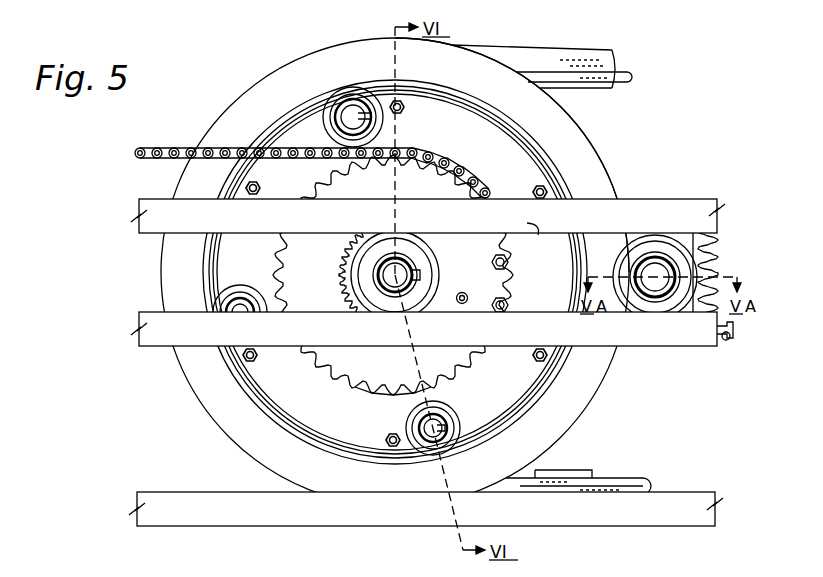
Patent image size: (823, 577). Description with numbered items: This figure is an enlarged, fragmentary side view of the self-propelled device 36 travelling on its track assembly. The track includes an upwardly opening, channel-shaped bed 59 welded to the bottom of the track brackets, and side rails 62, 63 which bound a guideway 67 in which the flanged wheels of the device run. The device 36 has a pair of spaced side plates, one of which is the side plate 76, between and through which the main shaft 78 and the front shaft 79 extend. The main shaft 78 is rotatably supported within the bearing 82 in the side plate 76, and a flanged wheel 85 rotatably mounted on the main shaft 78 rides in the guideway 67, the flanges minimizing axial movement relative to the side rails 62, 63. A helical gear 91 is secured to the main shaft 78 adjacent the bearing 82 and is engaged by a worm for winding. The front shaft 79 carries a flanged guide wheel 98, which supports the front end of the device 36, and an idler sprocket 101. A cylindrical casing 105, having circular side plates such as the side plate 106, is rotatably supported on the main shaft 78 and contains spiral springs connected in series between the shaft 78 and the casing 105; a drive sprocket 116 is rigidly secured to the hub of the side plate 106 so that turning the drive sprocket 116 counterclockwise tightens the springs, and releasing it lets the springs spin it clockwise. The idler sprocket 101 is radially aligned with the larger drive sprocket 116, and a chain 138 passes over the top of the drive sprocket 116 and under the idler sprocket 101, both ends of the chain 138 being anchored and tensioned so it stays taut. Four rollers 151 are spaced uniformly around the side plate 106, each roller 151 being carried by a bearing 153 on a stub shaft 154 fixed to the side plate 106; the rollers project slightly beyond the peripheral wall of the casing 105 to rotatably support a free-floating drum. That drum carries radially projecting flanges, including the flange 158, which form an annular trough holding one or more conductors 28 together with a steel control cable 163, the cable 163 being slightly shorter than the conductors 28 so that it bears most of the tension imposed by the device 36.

The conductor 28 is at (598, 63).
The self-propelled device 36 is at (610, 146).
The channel-shaped bed 59 is at (663, 491).
The side rail 62 is at (596, 199).
The side rail 63 is at (586, 357).
The guideway 67 is at (519, 221).
The side plate 76 is at (633, 283).
The main shaft 78 is at (412, 272).
The front shaft 79 is at (650, 270).
The bearing 82 is at (416, 283).
The wheel 85 is at (405, 246).
The helical gear 91 is at (341, 270).
The flanged guide wheel 98 is at (673, 252).
The idler sprocket 101 is at (702, 263).
The cylindrical casing 105 is at (498, 120).
The side plate of casing 106 is at (430, 393).
The drive sprocket 116 is at (431, 181).
The chain 138 is at (166, 148).
The roller 151 is at (353, 90).
The bearing 153 is at (373, 129).
The stub shaft 154 is at (333, 104).
The flange 158 is at (281, 74).
The control cable 163 is at (561, 471).